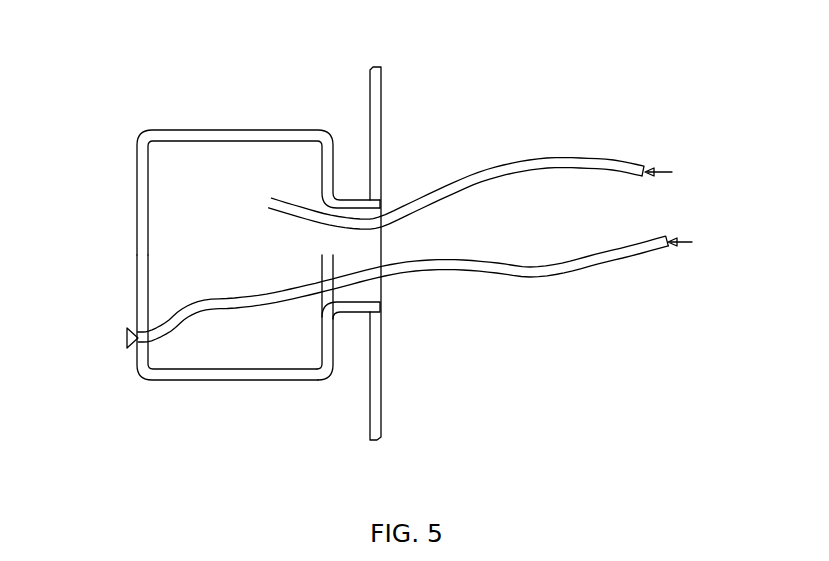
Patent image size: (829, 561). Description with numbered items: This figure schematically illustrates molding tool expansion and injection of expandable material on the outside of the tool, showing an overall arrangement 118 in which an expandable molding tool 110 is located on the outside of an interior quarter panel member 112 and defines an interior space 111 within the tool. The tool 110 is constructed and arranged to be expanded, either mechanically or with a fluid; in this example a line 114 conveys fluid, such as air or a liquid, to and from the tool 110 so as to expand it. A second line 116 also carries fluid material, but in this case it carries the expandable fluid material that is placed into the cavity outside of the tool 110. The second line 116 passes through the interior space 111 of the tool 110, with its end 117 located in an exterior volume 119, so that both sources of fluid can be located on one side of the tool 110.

The expandable molding tool 110 is at (270, 130).
The interior space 111 is at (167, 164).
The interior quarter panel member 112 is at (370, 85).
The line 114 is at (562, 168).
The second line 116 is at (542, 277).
The end 117 is at (127, 338).
The reinforcement assembly 118 is at (107, 379).
The exterior volume 119 is at (257, 420).